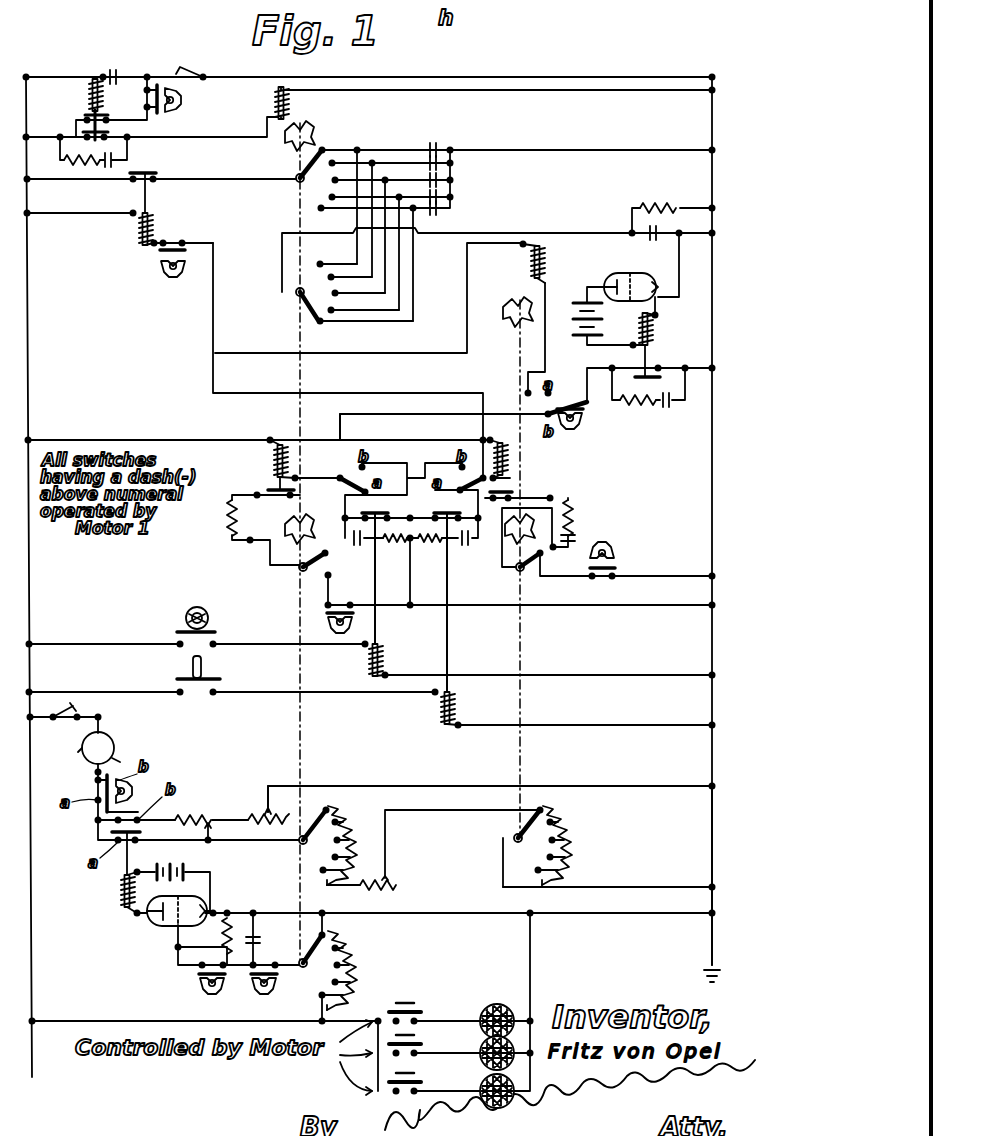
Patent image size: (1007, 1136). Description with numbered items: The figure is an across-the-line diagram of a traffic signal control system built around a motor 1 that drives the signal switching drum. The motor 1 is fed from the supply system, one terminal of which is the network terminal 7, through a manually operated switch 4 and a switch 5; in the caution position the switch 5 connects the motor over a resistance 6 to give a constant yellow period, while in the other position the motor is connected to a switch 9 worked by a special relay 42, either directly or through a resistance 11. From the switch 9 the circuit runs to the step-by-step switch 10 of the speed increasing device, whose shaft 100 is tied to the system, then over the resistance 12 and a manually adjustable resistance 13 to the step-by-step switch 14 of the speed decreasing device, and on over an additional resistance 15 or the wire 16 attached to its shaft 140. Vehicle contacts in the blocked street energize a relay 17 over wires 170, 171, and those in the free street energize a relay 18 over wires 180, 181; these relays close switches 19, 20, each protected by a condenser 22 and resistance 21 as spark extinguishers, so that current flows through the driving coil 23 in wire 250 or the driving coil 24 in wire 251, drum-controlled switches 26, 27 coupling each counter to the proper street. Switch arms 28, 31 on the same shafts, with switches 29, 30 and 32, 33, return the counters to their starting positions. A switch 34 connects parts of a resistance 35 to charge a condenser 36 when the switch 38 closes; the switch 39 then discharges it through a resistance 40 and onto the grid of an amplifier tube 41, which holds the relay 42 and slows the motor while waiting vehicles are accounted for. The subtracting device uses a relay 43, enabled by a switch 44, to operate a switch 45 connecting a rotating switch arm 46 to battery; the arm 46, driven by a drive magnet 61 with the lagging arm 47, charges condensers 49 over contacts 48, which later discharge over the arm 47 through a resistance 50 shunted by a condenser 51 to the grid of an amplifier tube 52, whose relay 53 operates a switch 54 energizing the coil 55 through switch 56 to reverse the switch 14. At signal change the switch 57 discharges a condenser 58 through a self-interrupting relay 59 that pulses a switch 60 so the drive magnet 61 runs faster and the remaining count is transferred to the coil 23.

The motor 1 is at (110, 745).
The manually operated switch 4 is at (64, 704).
The switch 5 is at (97, 792).
The resistance 6 is at (250, 812).
The network terminal 7 is at (732, 826).
The switch 9 is at (133, 828).
The step-by-step switch 10 is at (302, 822).
The resistance 11 is at (192, 824).
The resistance 12 is at (352, 788).
The manually adjustable resistance 13 is at (386, 892).
The step-by-step switch 14 is at (515, 828).
The additional resistance 15 is at (572, 832).
The wire 16 is at (608, 866).
The relay 17 is at (356, 660).
The relay 18 is at (465, 708).
The switch 19 is at (384, 496).
The switch 20 is at (456, 496).
The resistance 21 is at (410, 551).
The condenser 22 is at (406, 550).
The driving coil 23 is at (297, 459).
The driving coil 24 is at (510, 468).
The switch 26 is at (338, 490).
The switch 27 is at (468, 470).
The switch arm 28 is at (300, 572).
The switch 29 is at (286, 506).
The switch 30 is at (322, 628).
The switch arm 31 is at (534, 577).
The switch 32 is at (535, 483).
The switch 33 is at (645, 548).
The switch 34 is at (326, 966).
The resistance 35 is at (348, 983).
The condenser 36 is at (288, 928).
The switch 38 is at (302, 968).
The switch 39 is at (186, 978).
The resistance 40 is at (208, 924).
The amplifier tube 41 is at (170, 928).
The relay 42 is at (118, 890).
The relay 43 is at (137, 240).
The switch 44 is at (208, 226).
The switch 45 is at (151, 178).
The switch arm 46 is at (289, 159).
The switch arm 47 is at (300, 294).
The contacts 48 is at (361, 235).
The condensers 49 is at (429, 169).
The resistance 50 is at (658, 196).
The condenser 51 is at (657, 244).
The amplifier tube 52 is at (615, 296).
The relay 53 is at (661, 329).
The switch 54 is at (650, 378).
The coil 55 is at (516, 285).
The switch 56 is at (580, 384).
The switch 57 is at (178, 108).
The condenser 58 is at (90, 100).
The self-interrupting relay 59 is at (113, 85).
The switch 60 is at (82, 123).
The drive magnet 61 is at (272, 104).
The shaft 100 is at (306, 748).
The shaft 140 is at (526, 748).
The wire 170 is at (104, 633).
The wire 171 is at (271, 625).
The wire 180 is at (104, 681).
The wire 181 is at (306, 674).
The wire 250 is at (184, 428).
The wire 251 is at (444, 427).